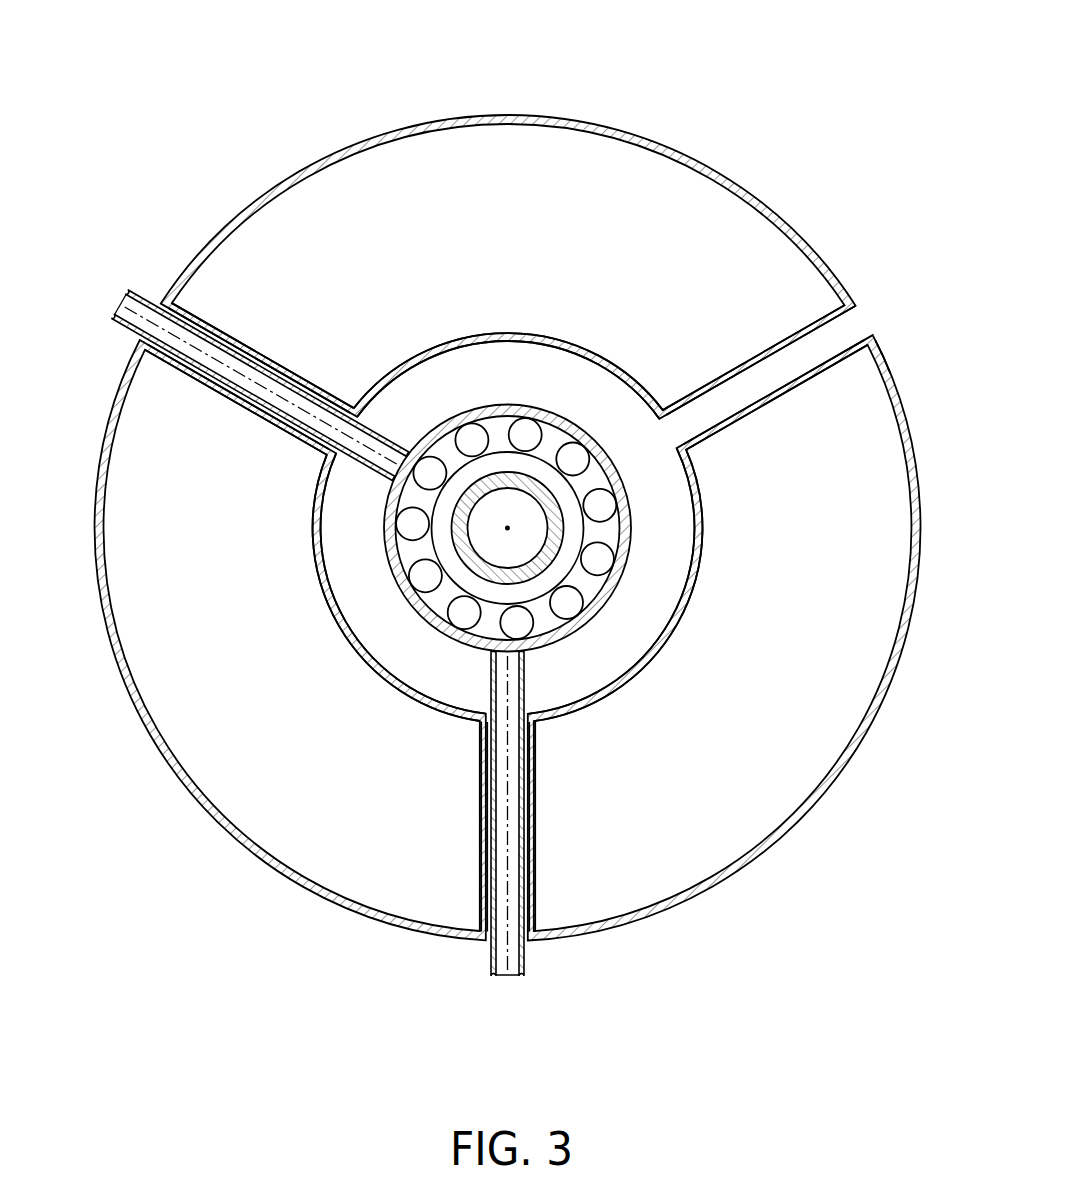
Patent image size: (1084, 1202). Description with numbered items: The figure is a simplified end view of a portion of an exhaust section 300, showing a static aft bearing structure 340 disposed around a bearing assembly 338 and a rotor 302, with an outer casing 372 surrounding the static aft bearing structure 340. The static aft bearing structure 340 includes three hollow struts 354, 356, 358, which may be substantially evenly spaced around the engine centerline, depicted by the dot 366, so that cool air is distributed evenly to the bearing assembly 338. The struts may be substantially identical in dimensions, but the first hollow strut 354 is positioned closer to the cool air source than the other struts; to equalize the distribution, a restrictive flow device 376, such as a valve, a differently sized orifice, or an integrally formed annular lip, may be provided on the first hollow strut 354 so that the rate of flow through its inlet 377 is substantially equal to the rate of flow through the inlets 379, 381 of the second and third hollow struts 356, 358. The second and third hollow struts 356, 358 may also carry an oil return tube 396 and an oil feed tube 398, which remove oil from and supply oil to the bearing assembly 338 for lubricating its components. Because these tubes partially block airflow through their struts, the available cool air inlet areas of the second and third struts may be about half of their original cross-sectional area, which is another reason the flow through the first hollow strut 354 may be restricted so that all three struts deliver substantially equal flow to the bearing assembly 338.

The exhaust section 300 is at (510, 500).
The rotor 302 is at (547, 553).
The bearing assembly 338 is at (541, 496).
The static aft bearing structure 340 is at (543, 335).
The first hollow strut 354 is at (777, 402).
The second hollow strut 356 is at (530, 788).
The third hollow strut 358 is at (225, 335).
The centerline 366 is at (508, 528).
The outer casing 372 is at (723, 178).
The restrictive flow device 376 is at (877, 338).
The inlet of the first hollow strut 377 is at (857, 320).
The inlet of the second hollow strut 379 is at (527, 942).
The inlet of the third hollow strut 381 is at (135, 335).
The oil return tube 396 is at (520, 882).
The oil feed tube 398 is at (283, 383).